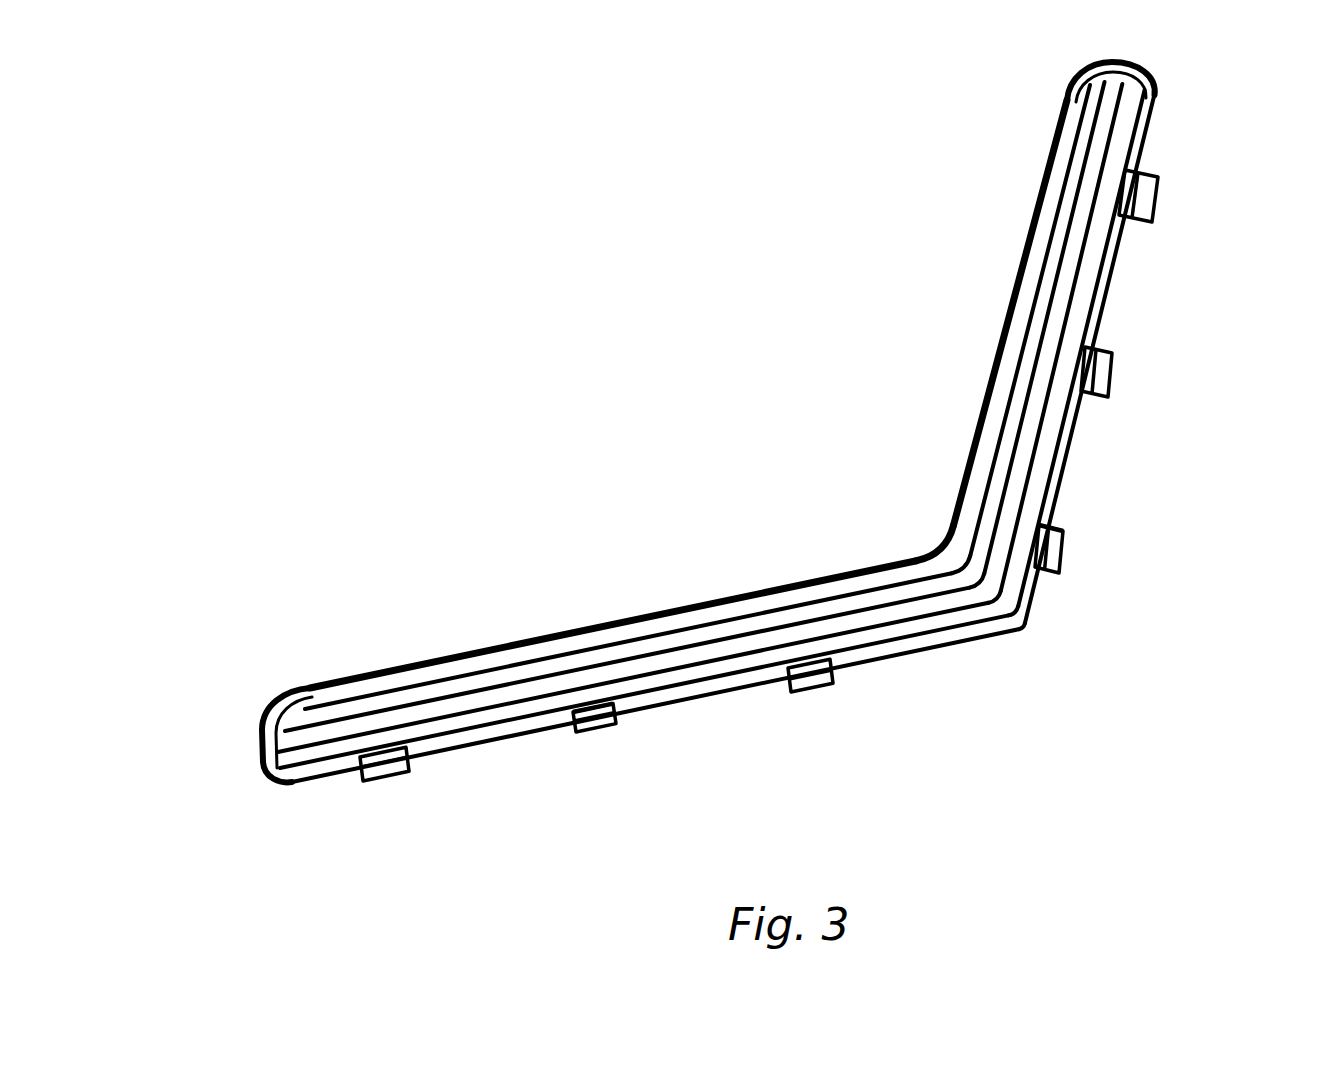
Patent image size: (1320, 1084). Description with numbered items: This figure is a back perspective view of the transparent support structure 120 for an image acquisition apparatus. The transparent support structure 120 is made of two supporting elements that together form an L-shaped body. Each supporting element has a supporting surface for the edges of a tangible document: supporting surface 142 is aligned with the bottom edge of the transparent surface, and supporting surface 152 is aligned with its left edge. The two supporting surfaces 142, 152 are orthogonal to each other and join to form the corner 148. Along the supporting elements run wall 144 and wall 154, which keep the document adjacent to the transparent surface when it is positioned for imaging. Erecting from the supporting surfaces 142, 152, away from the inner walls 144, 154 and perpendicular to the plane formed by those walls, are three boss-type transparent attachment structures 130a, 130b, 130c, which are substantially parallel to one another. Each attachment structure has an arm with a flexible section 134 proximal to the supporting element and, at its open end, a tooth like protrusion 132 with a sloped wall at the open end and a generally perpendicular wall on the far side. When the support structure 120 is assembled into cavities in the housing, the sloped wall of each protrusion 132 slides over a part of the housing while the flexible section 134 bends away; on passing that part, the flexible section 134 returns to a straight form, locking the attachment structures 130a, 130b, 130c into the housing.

The transparent support structure 120 is at (874, 565).
The boss-type transparent attachment structure 130a is at (838, 693).
The boss-type transparent attachment structure 130b is at (1072, 554).
The boss-type transparent attachment structure 130c is at (626, 728).
The tooth like protrusion 132 is at (583, 727).
The flexible section 134 is at (578, 722).
The supporting surface 142 is at (267, 763).
The wall 144 is at (633, 635).
The corner 148 is at (1020, 620).
The supporting surface 152 is at (1125, 139).
The wall 154 is at (1012, 282).